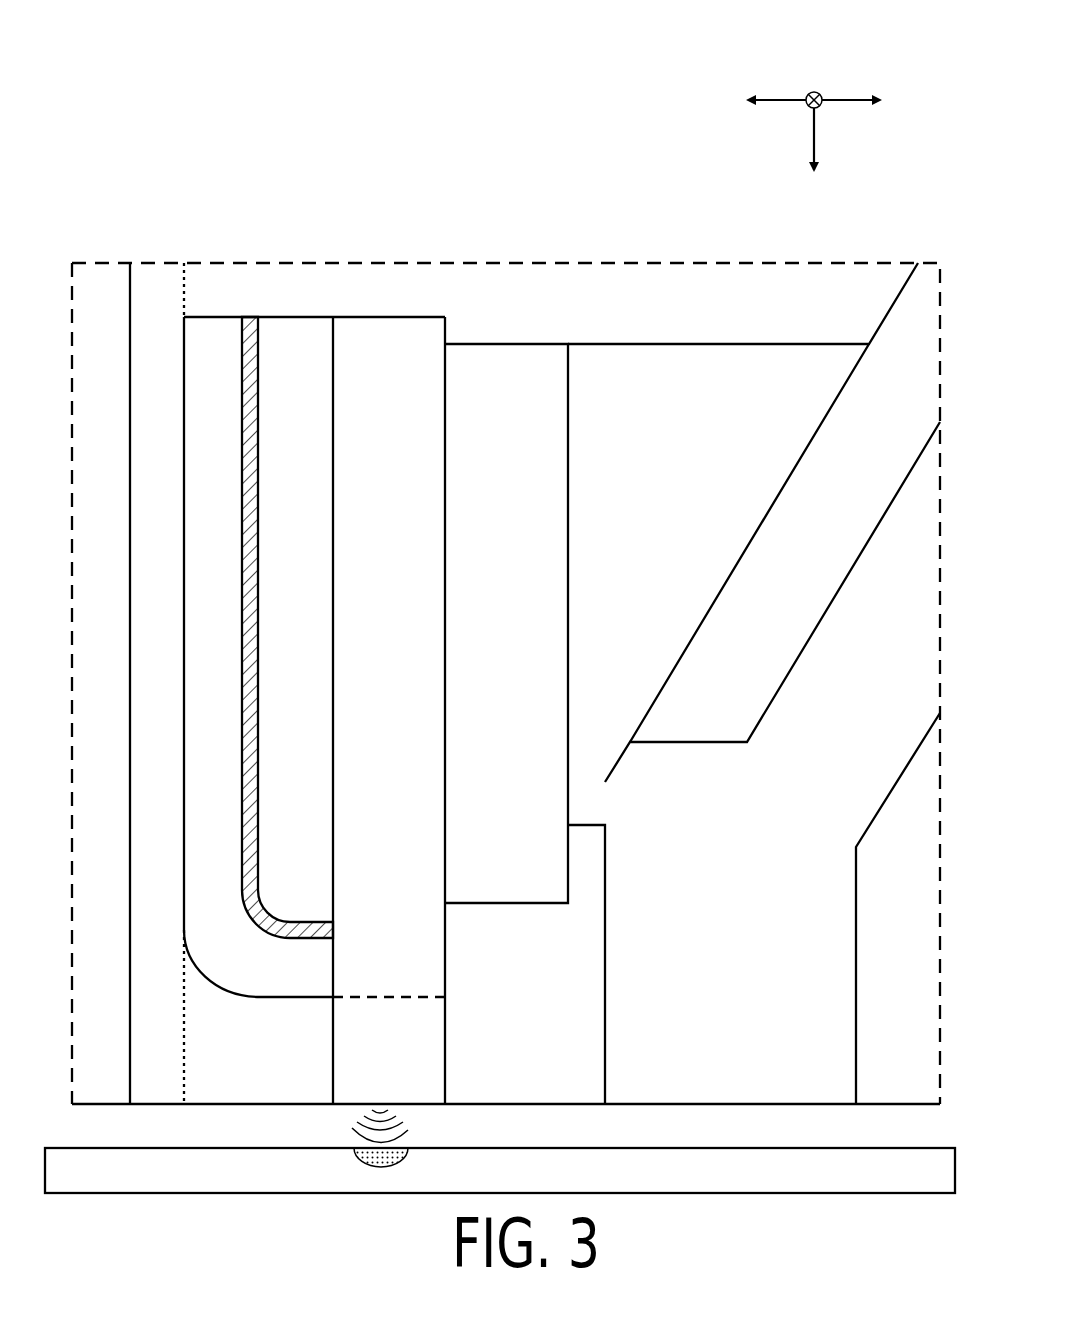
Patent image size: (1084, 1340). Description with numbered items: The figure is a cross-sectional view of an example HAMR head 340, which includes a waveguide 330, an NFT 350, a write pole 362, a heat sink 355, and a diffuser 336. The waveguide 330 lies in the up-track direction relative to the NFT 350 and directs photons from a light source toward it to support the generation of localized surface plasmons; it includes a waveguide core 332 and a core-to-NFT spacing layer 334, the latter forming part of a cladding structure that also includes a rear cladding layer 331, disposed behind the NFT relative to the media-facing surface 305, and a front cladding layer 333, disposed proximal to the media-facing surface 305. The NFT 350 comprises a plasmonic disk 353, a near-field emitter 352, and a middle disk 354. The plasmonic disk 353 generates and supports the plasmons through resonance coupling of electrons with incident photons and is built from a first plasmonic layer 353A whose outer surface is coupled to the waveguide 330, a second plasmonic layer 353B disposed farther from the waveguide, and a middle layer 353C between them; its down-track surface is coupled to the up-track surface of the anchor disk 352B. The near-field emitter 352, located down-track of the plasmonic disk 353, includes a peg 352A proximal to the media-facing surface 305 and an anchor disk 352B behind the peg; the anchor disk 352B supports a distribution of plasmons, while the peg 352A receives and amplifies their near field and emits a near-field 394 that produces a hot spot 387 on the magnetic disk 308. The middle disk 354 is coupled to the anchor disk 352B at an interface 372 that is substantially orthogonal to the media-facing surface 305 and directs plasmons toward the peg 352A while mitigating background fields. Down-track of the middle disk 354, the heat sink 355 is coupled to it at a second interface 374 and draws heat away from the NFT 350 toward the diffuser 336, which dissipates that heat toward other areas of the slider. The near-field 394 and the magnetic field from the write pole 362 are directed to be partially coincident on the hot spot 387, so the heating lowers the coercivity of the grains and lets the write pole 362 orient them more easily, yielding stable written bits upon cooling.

The HAMR head 340 is at (484, 120).
The NFT 350 is at (478, 284).
The waveguide 330 is at (184, 263).
The rear cladding layer 331 is at (275, 304).
The waveguide core 332 is at (124, 699).
The core-to-NFT spacing (CNS) layer 334 is at (182, 699).
The front cladding layer 333 is at (280, 1066).
The plasmonic disk 353 is at (290, 306).
The first plasmonic layer 353A is at (263, 954).
The second plasmonic layer 353B is at (327, 636).
The middle layer 353C is at (298, 797).
The near-field emitter 352 is at (384, 306).
The peg 352A is at (420, 1066).
The anchor disk 352B is at (422, 631).
The middle disk 354 is at (530, 631).
The heat sink 355 is at (687, 537).
The diffuser 336 is at (737, 714).
The write pole 362 is at (753, 989).
The interface 372 is at (452, 337).
The interface 374 is at (572, 343).
The media-facing surface 305 is at (202, 1105).
The near-field 394 is at (348, 1125).
The hot spot 387 is at (407, 1160).
The magnetic disk 308 is at (110, 1189).